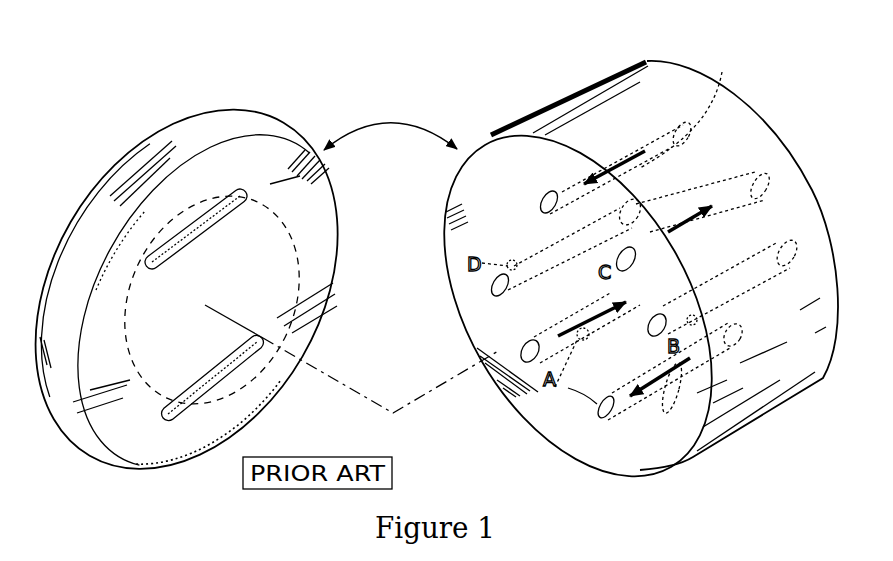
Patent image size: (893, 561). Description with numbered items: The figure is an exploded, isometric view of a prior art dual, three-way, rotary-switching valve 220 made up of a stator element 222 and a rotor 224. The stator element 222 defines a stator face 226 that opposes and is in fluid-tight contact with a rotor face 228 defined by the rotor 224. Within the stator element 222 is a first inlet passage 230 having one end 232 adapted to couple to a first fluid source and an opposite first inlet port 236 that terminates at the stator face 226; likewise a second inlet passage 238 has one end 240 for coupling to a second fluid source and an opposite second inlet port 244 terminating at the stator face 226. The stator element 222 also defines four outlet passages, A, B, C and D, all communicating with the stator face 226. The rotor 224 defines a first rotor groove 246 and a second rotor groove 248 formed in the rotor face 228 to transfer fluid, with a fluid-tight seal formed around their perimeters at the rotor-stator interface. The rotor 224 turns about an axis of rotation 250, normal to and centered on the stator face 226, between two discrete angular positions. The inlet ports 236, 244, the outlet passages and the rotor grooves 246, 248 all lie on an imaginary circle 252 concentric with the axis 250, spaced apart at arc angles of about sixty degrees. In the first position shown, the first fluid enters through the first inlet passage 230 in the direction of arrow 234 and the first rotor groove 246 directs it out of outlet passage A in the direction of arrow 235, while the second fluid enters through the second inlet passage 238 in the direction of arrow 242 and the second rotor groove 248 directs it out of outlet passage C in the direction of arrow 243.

The valve 220 is at (390, 118).
The stator element 222 is at (576, 80).
The rotor 224 is at (213, 136).
The stator face 226 is at (447, 222).
The rotor face 228 is at (307, 210).
The first inlet passage 230 is at (674, 401).
The end of first inlet passage 232 is at (743, 329).
The arrow 234 is at (690, 358).
The arrow 235 is at (557, 335).
The first inlet port 236 is at (598, 410).
The second inlet passage 238 is at (662, 122).
The end of second inlet passage 240 is at (706, 115).
The arrow 242 is at (617, 172).
The arrow 243 is at (652, 238).
The second inlet port 244 is at (540, 204).
The first rotor groove 246 is at (240, 356).
The second rotor groove 248 is at (188, 233).
The axis of rotation 250 is at (352, 377).
The imaginary circle 252 is at (325, 250).